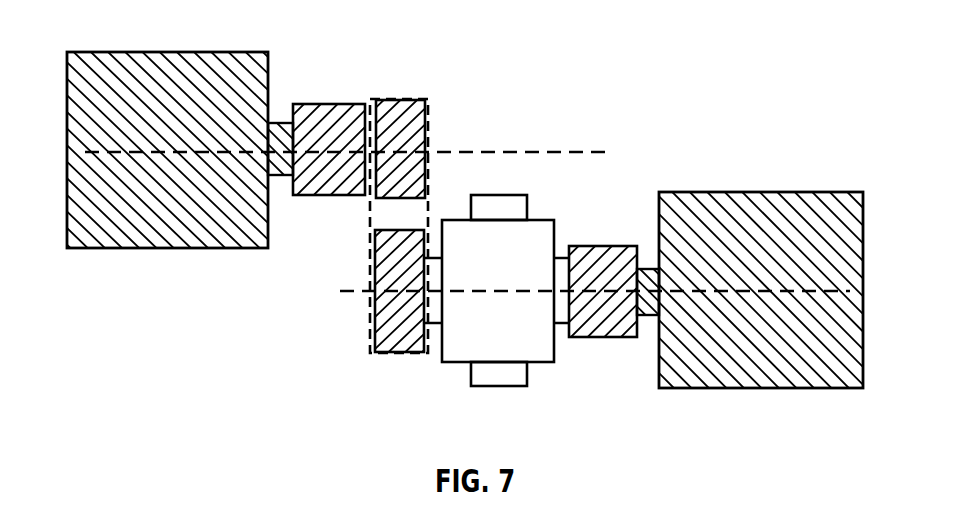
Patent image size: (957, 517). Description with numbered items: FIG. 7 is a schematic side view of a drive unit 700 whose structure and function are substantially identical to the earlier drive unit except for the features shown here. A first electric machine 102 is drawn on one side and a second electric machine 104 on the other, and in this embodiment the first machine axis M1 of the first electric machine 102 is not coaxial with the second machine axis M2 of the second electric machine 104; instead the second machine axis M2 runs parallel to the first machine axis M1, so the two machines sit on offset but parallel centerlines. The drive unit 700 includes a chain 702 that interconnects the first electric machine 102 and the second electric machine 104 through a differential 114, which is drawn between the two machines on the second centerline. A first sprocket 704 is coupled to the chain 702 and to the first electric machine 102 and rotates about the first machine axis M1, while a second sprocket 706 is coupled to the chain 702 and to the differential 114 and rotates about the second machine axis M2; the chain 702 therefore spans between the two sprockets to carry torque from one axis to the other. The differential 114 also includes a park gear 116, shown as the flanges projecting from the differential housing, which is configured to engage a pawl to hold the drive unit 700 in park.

The drive unit 700 is at (690, 25).
The first electric machine 102 is at (136, 38).
The second electric machine 104 is at (788, 179).
The differential 114 is at (553, 208).
The park gear 116 is at (512, 195).
The chain 702 is at (427, 102).
The first sprocket 704 is at (413, 141).
The second sprocket 706 is at (378, 338).
The first machine axis M1 is at (150, 152).
The second machine axis M2 is at (730, 291).